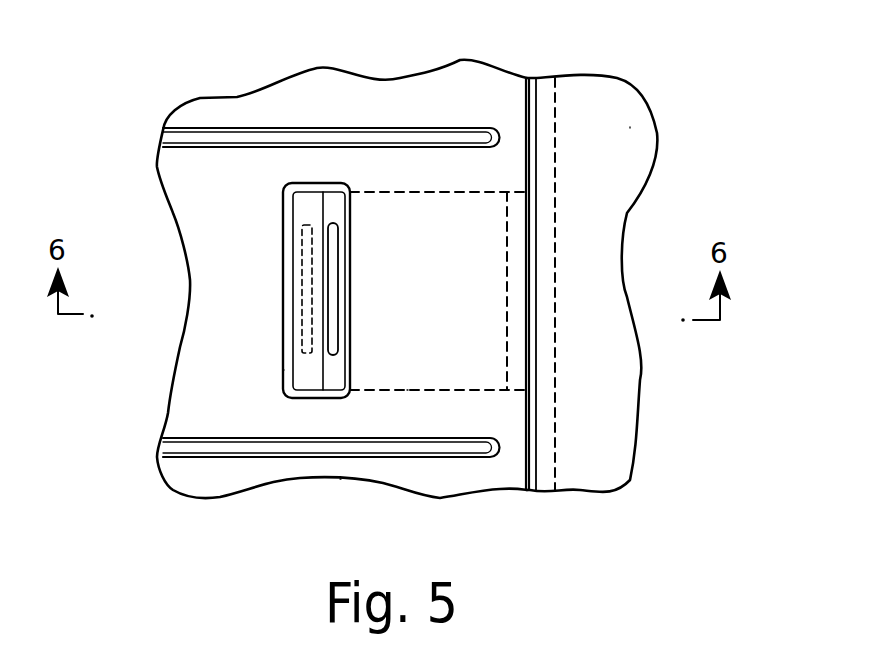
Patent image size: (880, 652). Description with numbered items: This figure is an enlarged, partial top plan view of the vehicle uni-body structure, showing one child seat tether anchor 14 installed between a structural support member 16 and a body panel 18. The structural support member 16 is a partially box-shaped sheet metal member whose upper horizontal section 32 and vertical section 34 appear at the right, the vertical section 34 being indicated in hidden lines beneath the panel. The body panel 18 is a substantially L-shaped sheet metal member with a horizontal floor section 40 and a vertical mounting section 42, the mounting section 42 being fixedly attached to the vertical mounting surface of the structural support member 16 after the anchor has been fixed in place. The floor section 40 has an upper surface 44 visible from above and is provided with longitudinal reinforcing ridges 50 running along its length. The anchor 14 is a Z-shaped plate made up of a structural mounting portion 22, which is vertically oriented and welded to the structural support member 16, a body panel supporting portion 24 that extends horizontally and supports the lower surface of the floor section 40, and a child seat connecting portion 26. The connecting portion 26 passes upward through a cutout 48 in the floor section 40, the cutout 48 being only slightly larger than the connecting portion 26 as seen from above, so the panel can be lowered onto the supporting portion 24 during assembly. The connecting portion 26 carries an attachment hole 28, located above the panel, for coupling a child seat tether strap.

The child seat tether anchor 14 is at (280, 370).
The structural support member 16 is at (660, 165).
The body panel 18 is at (237, 97).
The structural mounting portion 22 is at (513, 342).
The body panel supporting portion 24 is at (407, 390).
The child seat connecting portion 26 is at (307, 208).
The attachment hole 28 is at (333, 277).
The upper horizontal section 32 is at (630, 127).
The vertical section 34 is at (543, 135).
The floor section 40 is at (340, 480).
The mounting section 42 is at (527, 482).
The upper surface 44 is at (250, 342).
The cutout 48 is at (290, 260).
The longitudinal reinforcing ridge 50 is at (195, 147).